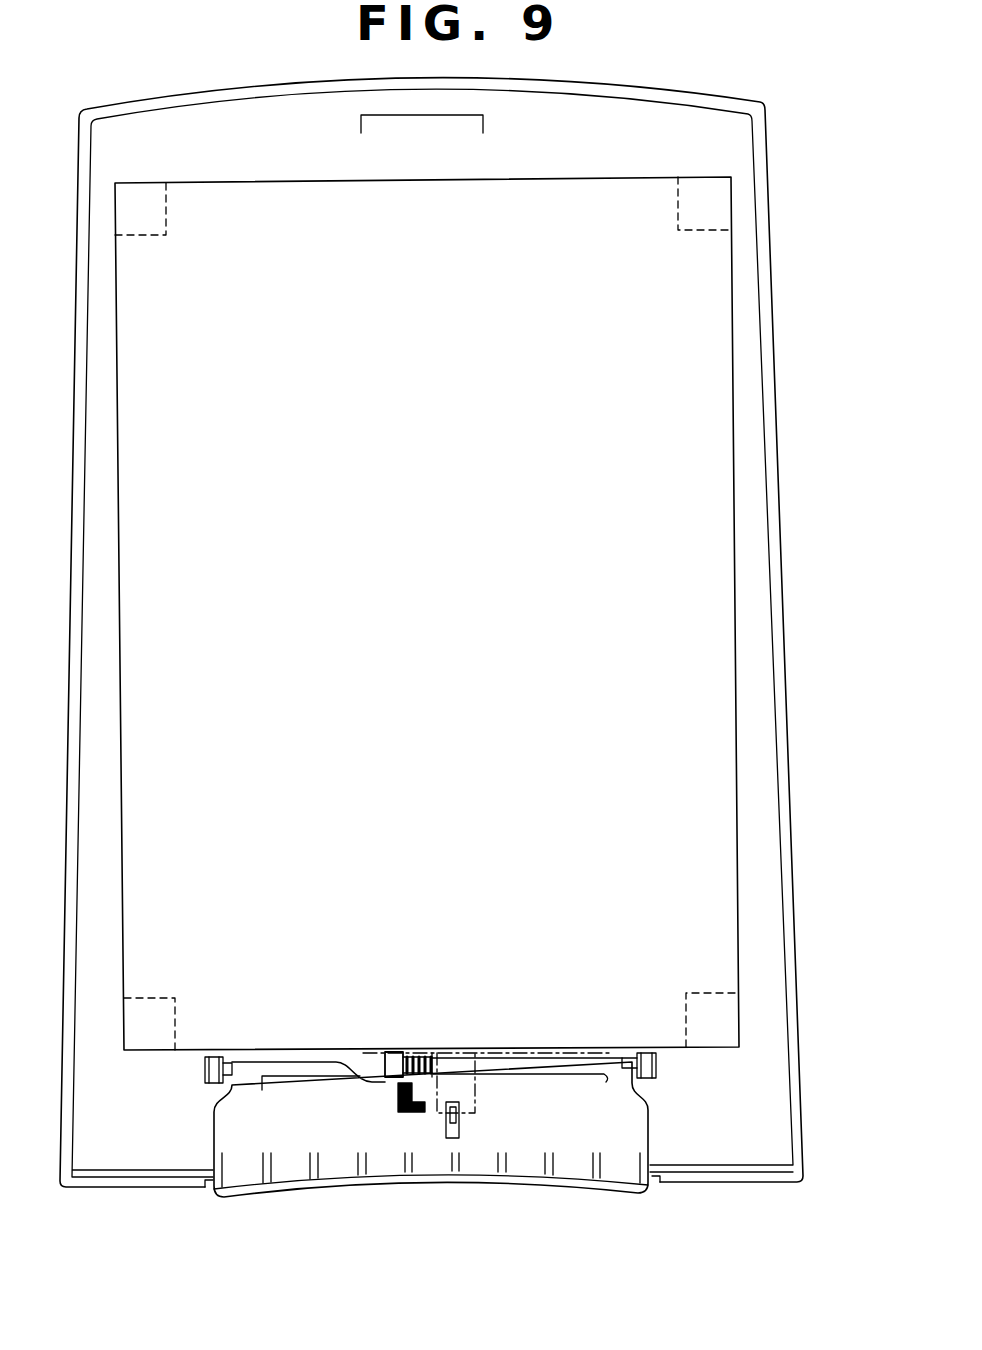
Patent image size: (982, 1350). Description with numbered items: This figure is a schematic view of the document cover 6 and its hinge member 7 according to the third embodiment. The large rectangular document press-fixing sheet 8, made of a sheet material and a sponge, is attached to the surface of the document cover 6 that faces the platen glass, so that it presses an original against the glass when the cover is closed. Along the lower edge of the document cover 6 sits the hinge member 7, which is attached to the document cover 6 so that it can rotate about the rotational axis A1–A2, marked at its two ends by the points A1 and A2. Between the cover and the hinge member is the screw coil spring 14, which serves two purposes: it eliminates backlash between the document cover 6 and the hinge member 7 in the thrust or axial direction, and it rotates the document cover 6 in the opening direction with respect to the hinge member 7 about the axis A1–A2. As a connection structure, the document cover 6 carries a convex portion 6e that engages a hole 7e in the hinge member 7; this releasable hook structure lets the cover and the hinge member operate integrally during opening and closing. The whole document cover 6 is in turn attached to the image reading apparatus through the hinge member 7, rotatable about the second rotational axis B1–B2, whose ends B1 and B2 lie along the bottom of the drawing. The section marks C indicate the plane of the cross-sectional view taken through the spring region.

The document cover 6 is at (782, 841).
The document press-fixing sheet 8 is at (708, 556).
The hinge member 7 is at (571, 1167).
The screw coil spring 14 is at (421, 1058).
The hole 7e is at (443, 1140).
The convex portion 6e is at (462, 1135).
The rotational axis A1–A2 end A1 is at (214, 1068).
The rotational axis A1–A2 end A2 is at (646, 1070).
The rotational axis B1–B2 end B1 is at (203, 1220).
The rotational axis B1–B2 end B2 is at (658, 1218).
The section mark C is at (357, 1053).